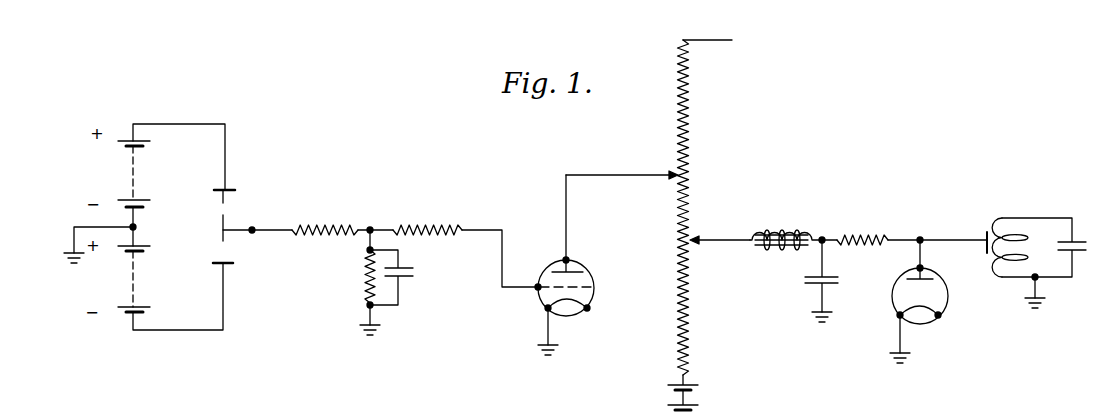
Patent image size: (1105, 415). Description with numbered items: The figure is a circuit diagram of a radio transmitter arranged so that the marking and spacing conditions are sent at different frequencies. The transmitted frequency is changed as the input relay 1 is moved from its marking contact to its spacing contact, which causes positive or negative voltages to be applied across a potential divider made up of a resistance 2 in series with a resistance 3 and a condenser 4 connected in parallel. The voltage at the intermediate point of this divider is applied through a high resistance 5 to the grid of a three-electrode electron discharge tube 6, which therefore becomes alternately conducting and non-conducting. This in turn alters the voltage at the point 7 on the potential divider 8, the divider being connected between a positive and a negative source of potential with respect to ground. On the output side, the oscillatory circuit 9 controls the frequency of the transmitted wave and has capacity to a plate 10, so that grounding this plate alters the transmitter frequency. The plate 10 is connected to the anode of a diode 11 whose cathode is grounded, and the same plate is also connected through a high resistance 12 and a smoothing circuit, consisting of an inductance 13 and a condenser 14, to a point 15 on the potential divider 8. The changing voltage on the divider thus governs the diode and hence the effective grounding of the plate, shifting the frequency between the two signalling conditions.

The input relay 1 is at (225, 226).
The resistance 2 is at (323, 226).
The resistance 3 is at (365, 267).
The condenser 4 is at (413, 272).
The high resistance 5 is at (427, 226).
The three-electrode electron discharge tube 6 is at (592, 302).
The point on the potential divider 7 is at (677, 180).
The potential divider 8 is at (687, 145).
The oscillatory circuit 9 is at (1027, 251).
The plate 10 is at (988, 234).
The diode 11 is at (942, 312).
The high resistance 12 is at (882, 237).
The inductance 13 is at (810, 225).
The condenser 14 is at (828, 283).
The point on the potential divider 15 is at (697, 233).